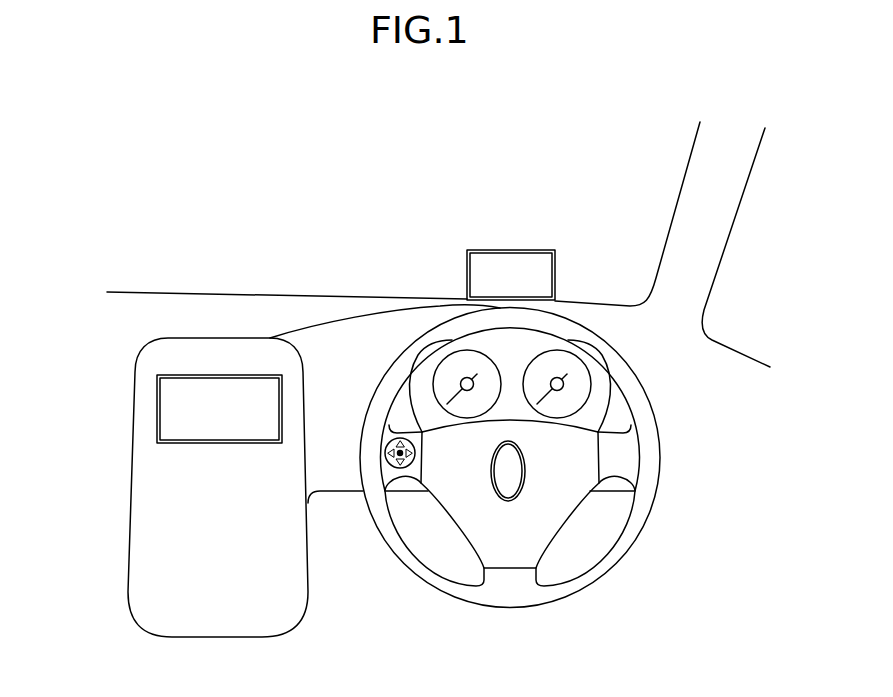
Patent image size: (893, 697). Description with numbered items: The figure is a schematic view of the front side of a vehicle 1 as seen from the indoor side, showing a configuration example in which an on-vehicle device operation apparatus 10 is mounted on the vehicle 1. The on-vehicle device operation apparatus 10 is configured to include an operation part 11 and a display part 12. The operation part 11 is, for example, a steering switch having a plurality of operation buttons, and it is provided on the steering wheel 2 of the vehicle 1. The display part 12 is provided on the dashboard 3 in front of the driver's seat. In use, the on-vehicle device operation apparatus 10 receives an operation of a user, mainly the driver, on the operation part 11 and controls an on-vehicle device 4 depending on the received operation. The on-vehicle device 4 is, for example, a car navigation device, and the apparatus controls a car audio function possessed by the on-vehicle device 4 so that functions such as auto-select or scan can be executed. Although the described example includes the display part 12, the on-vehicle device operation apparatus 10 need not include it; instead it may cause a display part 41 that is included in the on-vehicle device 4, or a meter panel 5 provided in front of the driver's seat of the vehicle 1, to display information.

The vehicle 1 is at (115, 117).
The steering wheel 2 is at (417, 565).
The dashboard 3 is at (328, 300).
The on-vehicle device 4 is at (158, 362).
The display part 41 is at (157, 403).
The meter panel 5 is at (600, 403).
The on-vehicle device operation apparatus 10 is at (427, 231).
The operation part 11 is at (387, 447).
The display part 12 is at (467, 275).